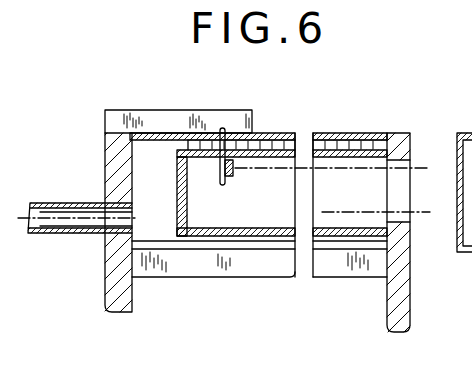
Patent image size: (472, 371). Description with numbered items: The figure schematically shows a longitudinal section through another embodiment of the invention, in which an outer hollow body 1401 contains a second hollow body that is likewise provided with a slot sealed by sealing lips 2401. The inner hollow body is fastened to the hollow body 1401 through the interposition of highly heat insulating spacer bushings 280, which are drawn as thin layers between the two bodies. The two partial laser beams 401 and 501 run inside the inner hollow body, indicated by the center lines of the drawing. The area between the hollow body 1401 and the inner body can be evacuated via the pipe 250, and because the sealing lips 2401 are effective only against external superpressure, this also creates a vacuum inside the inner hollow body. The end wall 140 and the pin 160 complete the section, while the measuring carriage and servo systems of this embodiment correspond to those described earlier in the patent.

The tube 250 is at (50, 203).
The pin 160 is at (232, 131).
The spacer bushing 280 is at (337, 140).
The hollow body 1401 is at (372, 132).
The end wall 140 is at (400, 133).
The sealing lips 2401 is at (177, 262).
The partial laser beam 501 is at (262, 166).
The partial laser beam 401 is at (352, 213).